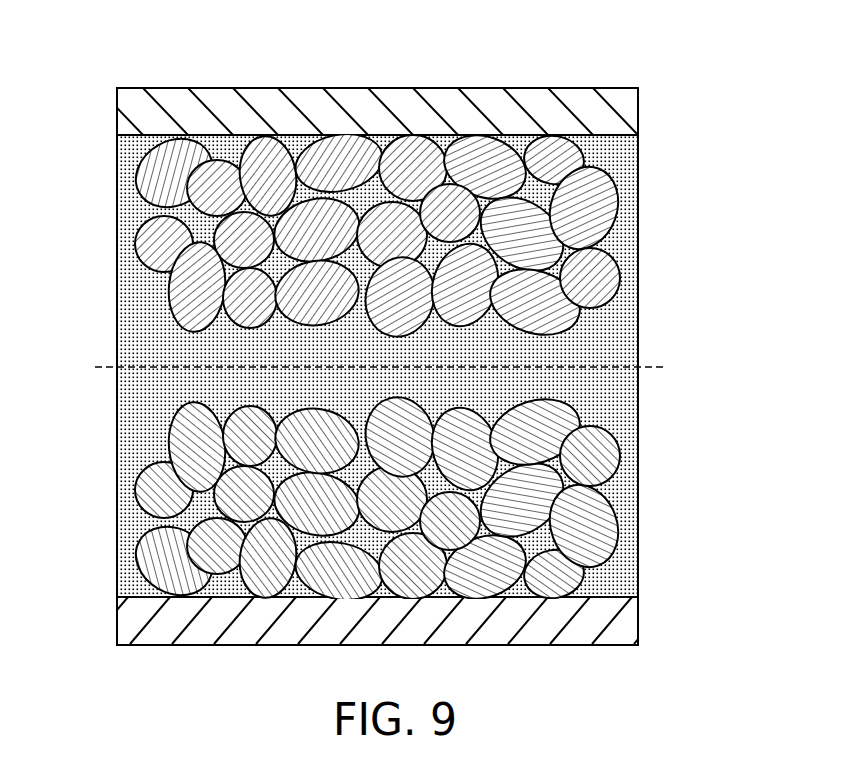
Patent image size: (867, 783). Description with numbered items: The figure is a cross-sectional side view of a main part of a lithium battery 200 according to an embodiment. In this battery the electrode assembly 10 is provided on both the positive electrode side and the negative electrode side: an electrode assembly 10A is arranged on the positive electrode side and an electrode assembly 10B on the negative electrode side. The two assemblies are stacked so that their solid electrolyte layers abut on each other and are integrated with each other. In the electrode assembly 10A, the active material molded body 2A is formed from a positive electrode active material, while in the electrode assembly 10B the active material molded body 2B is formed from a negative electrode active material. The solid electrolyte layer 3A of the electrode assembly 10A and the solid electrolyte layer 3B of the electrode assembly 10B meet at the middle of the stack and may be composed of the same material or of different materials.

The lithium battery 200 is at (410, 323).
The electrode assembly 10 is at (415, 366).
The electrode assembly on the positive electrode side 10A is at (390, 506).
The electrode assembly on the negative electrode side 10B is at (393, 227).
The active material molded body 2A is at (132, 486).
The active material molded body 2B is at (138, 167).
The solid electrolyte layer 3A is at (128, 401).
The solid electrolyte layer 3B is at (133, 280).